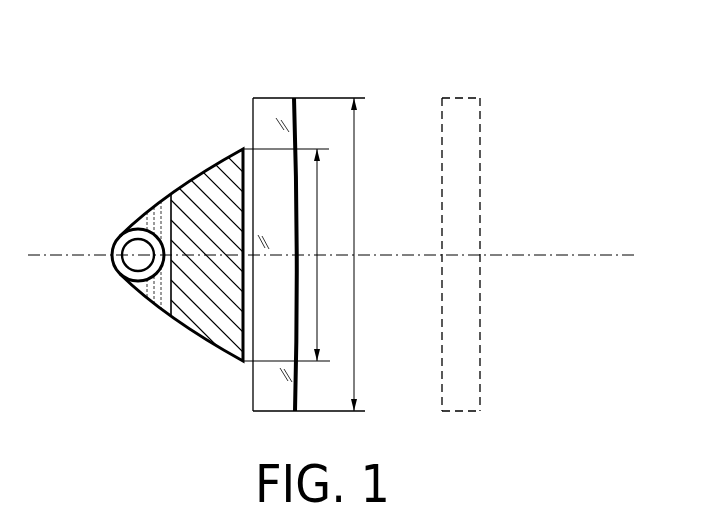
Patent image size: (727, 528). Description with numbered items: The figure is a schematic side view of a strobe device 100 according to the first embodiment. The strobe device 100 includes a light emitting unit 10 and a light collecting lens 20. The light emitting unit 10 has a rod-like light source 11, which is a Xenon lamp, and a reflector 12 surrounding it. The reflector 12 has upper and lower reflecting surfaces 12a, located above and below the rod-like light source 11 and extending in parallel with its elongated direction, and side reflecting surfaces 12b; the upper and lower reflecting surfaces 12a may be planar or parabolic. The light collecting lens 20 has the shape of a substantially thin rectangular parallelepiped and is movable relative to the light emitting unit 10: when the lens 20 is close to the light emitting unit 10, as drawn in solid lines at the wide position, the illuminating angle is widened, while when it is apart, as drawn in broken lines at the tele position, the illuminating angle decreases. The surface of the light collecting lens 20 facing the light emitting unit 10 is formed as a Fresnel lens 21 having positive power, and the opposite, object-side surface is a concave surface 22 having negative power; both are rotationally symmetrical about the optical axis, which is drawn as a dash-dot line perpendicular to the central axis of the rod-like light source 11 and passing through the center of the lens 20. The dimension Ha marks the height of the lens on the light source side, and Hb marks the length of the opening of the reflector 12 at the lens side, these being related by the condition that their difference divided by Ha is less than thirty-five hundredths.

The light emitting unit 10 is at (124, 175).
The rod-like light source 11 is at (137, 262).
The reflector 12 is at (210, 302).
The upper and lower reflecting surfaces 12a is at (212, 163).
The side reflecting surfaces 12b is at (171, 306).
The light collecting lens 20 is at (295, 79).
The Fresnel lens surface 21 is at (442, 184).
The concave surface 22 is at (478, 280).
The strobe device 100 is at (546, 166).